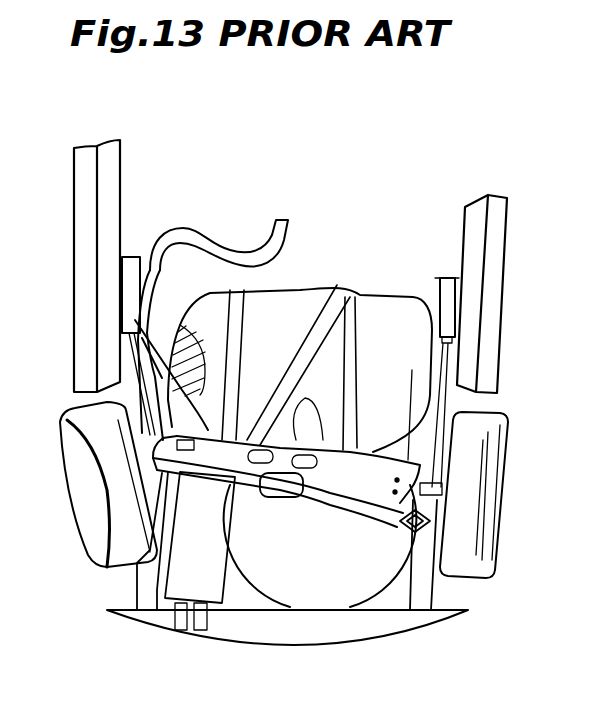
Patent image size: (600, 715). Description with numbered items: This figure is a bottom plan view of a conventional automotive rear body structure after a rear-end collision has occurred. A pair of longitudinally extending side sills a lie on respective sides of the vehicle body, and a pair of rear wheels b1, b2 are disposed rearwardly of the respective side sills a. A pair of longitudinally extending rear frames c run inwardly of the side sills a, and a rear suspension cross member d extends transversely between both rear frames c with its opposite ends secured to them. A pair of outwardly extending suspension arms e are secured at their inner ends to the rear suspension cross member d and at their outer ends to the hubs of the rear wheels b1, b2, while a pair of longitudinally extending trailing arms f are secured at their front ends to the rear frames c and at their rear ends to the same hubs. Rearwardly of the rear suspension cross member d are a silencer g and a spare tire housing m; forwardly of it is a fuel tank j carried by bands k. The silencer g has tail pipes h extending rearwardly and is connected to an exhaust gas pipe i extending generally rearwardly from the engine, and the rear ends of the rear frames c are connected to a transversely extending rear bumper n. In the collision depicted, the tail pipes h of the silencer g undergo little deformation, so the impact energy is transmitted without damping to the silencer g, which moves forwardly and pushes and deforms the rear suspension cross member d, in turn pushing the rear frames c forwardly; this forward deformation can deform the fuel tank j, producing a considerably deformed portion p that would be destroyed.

The side sill a is at (84, 284).
The trailing arm f is at (133, 374).
The exhaust gas pipe i is at (217, 248).
The fuel tank j is at (395, 310).
The deformed portion p is at (185, 325).
The band k is at (342, 288).
The rear suspension cross member d is at (373, 457).
The suspension arm e is at (253, 493).
The rear wheel b1 is at (85, 518).
The rear wheel b2 is at (483, 512).
The rear frame c is at (148, 586).
The silencer g is at (212, 583).
The tail pipe h is at (200, 634).
The spare tire housing m is at (316, 595).
The rear bumper n is at (372, 638).